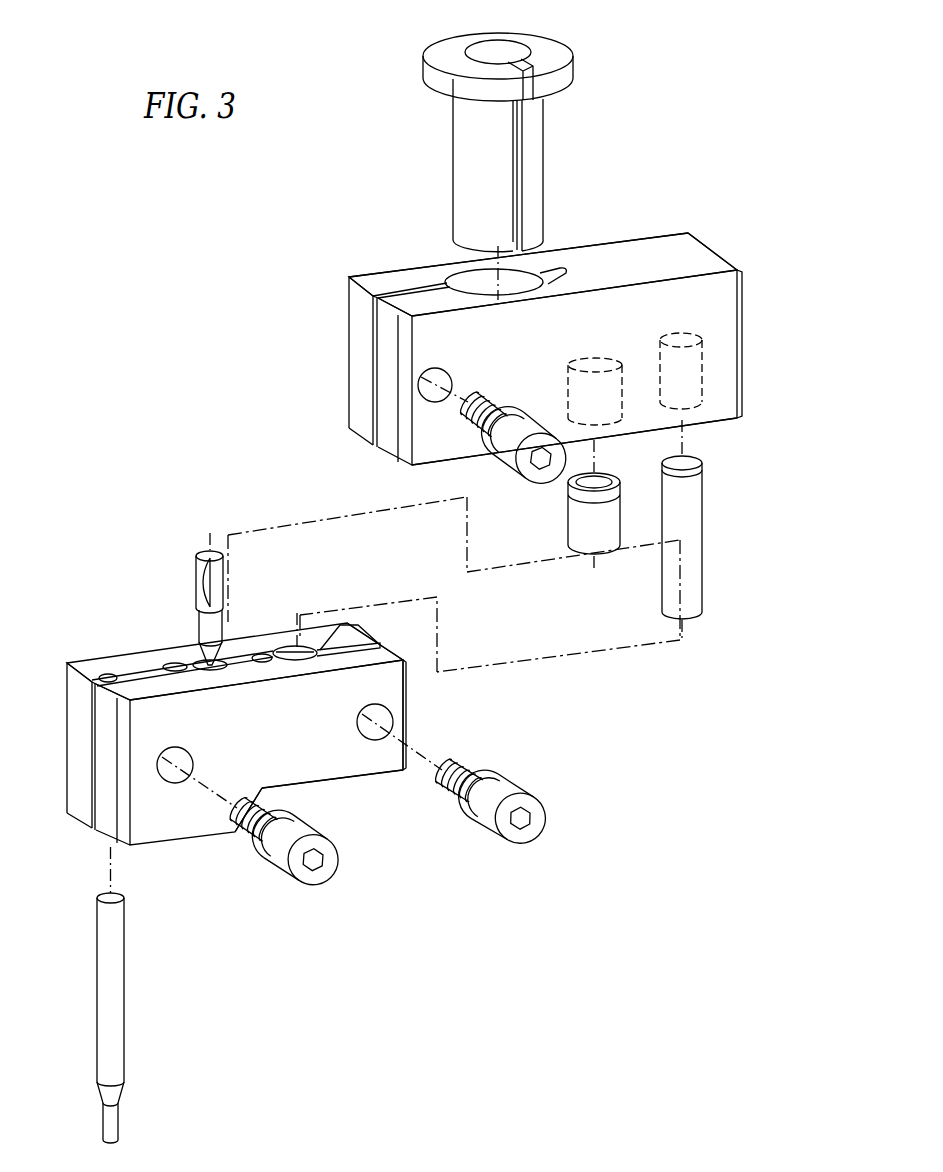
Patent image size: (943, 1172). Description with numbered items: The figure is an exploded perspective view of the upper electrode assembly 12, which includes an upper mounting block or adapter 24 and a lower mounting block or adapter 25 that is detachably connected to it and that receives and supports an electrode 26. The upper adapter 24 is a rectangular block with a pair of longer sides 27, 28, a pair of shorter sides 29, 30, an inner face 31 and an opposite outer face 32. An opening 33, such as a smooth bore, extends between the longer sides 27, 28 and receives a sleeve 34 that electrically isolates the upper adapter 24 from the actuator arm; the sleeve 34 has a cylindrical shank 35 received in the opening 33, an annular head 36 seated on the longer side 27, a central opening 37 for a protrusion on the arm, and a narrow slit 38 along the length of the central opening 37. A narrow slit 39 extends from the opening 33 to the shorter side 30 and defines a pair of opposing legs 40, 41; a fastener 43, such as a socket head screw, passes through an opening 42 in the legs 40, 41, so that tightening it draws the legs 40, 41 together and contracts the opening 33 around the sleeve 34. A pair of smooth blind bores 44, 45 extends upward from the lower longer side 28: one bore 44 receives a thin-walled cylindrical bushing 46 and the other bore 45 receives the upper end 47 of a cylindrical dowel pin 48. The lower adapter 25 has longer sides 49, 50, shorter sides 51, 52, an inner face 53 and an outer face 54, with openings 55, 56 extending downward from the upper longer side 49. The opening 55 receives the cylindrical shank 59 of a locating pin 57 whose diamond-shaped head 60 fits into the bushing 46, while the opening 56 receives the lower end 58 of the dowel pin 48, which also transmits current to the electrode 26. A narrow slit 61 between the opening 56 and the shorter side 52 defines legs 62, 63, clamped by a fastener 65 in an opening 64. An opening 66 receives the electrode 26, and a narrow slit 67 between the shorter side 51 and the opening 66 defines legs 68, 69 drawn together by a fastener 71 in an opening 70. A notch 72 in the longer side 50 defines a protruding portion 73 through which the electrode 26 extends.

The upper electrode assembly 12 is at (187, 328).
The upper mounting block or adapter 24 is at (752, 282).
The lower mounting block or adapter 25 is at (222, 918).
The electrode 26 is at (145, 1056).
The longer side 27 is at (634, 258).
The longer side 28 is at (714, 424).
The shorter side 29 is at (357, 327).
The shorter side 30 is at (711, 247).
The inner face 31 is at (586, 338).
The outer face 32 is at (410, 265).
The opening 33 is at (517, 287).
The sleeve 34 is at (428, 103).
The cylindrical shank 35 is at (477, 145).
The annular head 36 is at (552, 85).
The central opening 37 is at (503, 55).
The narrow slit 38 is at (515, 163).
The narrow slit 39 is at (373, 353).
The leg 40 is at (388, 396).
The leg 41 is at (357, 376).
The opening 42 is at (435, 396).
The fastener 43 is at (548, 475).
The smooth blind bore 44 is at (610, 357).
The smooth blind bore 45 is at (703, 350).
The thin-walled cylindrical bushing 46 is at (606, 555).
The upper end of dowel pin 47 is at (700, 480).
The cylindrical dowel pin 48 is at (708, 532).
The longer side 49 is at (158, 655).
The longer side 50 is at (238, 836).
The shorter side 51 is at (80, 757).
The shorter side 52 is at (405, 712).
The inner face 53 is at (241, 743).
The outer face 54 is at (253, 637).
The opening 55 is at (205, 662).
The opening 56 is at (289, 645).
The locating pin 57 is at (181, 551).
The lower end of dowel pin 58 is at (700, 606).
The cylindrical shank 59 is at (205, 625).
The diamond-shaped head 60 is at (205, 572).
The narrow slit 61 is at (350, 642).
The leg 62 is at (372, 658).
The leg 63 is at (333, 637).
The opening 64 is at (372, 733).
The fastener 65 is at (520, 840).
The opening 66 is at (112, 677).
The narrow slit 67 is at (90, 727).
The leg 68 is at (105, 780).
The leg 69 is at (80, 703).
The opening 70 is at (178, 780).
The fastener 71 is at (322, 883).
The notch 72 is at (315, 788).
The raised or protruding portion 73 is at (235, 832).